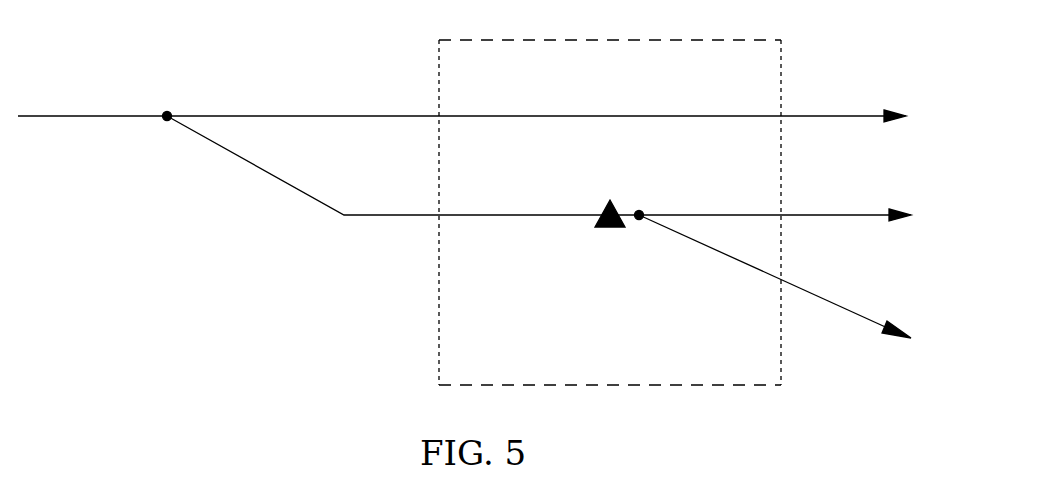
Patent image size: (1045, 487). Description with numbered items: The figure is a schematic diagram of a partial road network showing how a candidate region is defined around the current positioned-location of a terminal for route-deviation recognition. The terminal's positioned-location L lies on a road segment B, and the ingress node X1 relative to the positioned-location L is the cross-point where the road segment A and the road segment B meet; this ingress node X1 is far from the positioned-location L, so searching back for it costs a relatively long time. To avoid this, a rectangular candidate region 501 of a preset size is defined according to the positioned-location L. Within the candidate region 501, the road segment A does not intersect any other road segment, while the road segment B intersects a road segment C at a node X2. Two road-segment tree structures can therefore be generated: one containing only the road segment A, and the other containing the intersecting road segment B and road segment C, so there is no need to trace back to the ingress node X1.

The candidate region 501 is at (758, 38).
The ingress node X1 is at (159, 130).
The node X2 is at (642, 204).
The positioned-location L is at (604, 207).
The road segment A is at (474, 122).
The road segment B is at (548, 181).
The road segment C is at (784, 292).